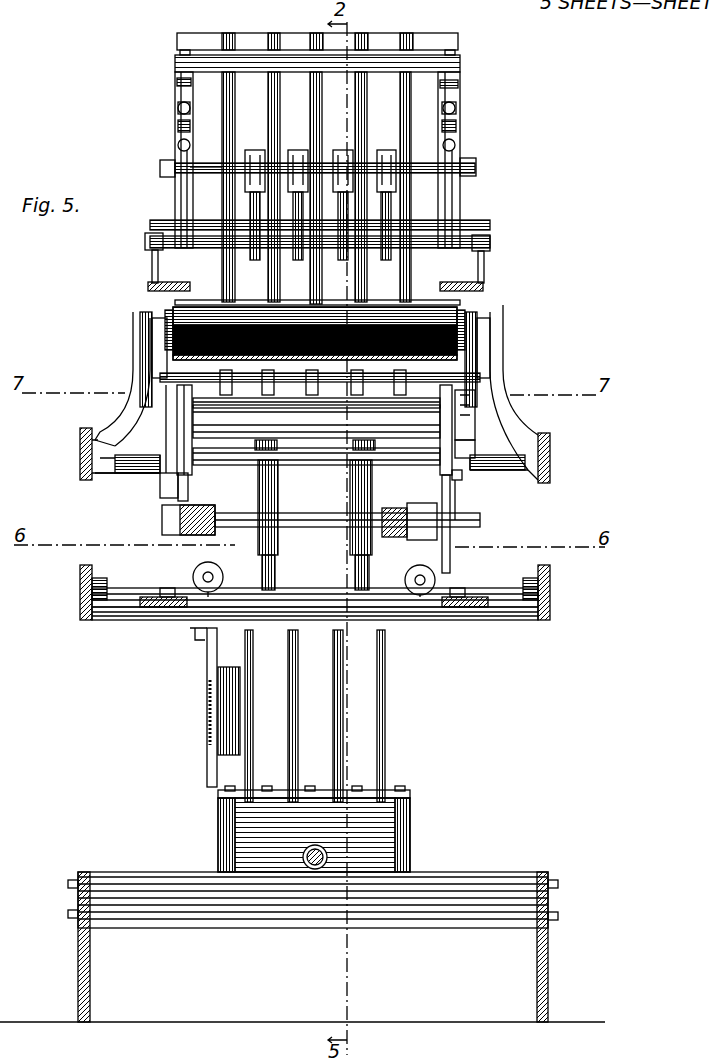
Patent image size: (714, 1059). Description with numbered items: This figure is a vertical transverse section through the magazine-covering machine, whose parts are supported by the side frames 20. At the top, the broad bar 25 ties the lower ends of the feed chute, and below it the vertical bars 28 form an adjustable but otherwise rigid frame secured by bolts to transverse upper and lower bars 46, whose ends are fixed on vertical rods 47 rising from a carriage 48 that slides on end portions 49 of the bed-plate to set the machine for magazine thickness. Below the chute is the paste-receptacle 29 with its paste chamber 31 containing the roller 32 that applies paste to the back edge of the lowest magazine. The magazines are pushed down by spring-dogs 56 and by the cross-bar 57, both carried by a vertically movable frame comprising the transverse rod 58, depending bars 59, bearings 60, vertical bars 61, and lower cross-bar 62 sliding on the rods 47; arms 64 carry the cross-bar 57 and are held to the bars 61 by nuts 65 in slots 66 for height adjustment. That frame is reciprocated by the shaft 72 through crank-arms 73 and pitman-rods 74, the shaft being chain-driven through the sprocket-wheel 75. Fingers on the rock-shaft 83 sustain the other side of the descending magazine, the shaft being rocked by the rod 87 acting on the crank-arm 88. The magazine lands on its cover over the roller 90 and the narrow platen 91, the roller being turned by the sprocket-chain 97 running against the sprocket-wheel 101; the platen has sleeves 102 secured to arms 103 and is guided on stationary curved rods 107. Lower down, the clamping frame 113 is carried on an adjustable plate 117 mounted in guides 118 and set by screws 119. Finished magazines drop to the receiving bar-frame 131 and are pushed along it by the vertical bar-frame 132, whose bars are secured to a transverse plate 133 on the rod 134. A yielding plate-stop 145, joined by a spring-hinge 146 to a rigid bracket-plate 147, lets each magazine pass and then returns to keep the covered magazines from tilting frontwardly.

The side frames 20 is at (80, 470).
The broad bar 25 is at (148, 286).
The vertical bars 28 is at (222, 80).
The paste-receptacle 29 is at (173, 342).
The paste chamber 31 is at (477, 343).
The roller 32 is at (208, 294).
The transverse upper and lower bars 46 is at (177, 40).
The vertical rods 47 is at (152, 266).
The carriage 48 is at (260, 412).
The end portions of bed-plate 49 is at (140, 473).
The spring-dogs 56 is at (296, 160).
The cross-bar 57 is at (250, 64).
The transverse rod 58 is at (220, 165).
The depending bars 59 is at (255, 262).
The bearings 60 is at (175, 160).
The vertical bars 61 is at (178, 190).
The lower cross-bar 62 is at (145, 238).
The arms 64 is at (177, 88).
The nuts 65 is at (178, 110).
The slots 66 is at (178, 128).
The shaft 72 is at (322, 516).
The crank-arms 73 is at (162, 505).
The pitman-rods 74 is at (140, 406).
The sprocket-wheel 75 is at (450, 565).
The rock-shaft 83 is at (490, 368).
The rod 87 is at (140, 324).
The crank-arm 88 is at (158, 350).
The roller 90 is at (192, 470).
The platen 91 is at (345, 470).
The sprocket-chain 97 is at (480, 400).
The sprocket-wheel 101 is at (478, 420).
The sleeves 102 is at (170, 478).
The arms 103 is at (185, 485).
The stationary curved rods 107 is at (255, 430).
The clamping frame 113 is at (350, 550).
The adjustable plate 117 is at (332, 590).
The guides 118 is at (158, 596).
The screws 119 is at (222, 562).
The receiving bar-frame 131 is at (390, 790).
The vertical bar-frame 132 is at (298, 715).
The transverse plate 133 is at (314, 835).
The rod 134 is at (312, 870).
The plate-stop 145 is at (228, 690).
The spring-hinge 146 is at (206, 728).
The bracket-plate 147 is at (210, 770).